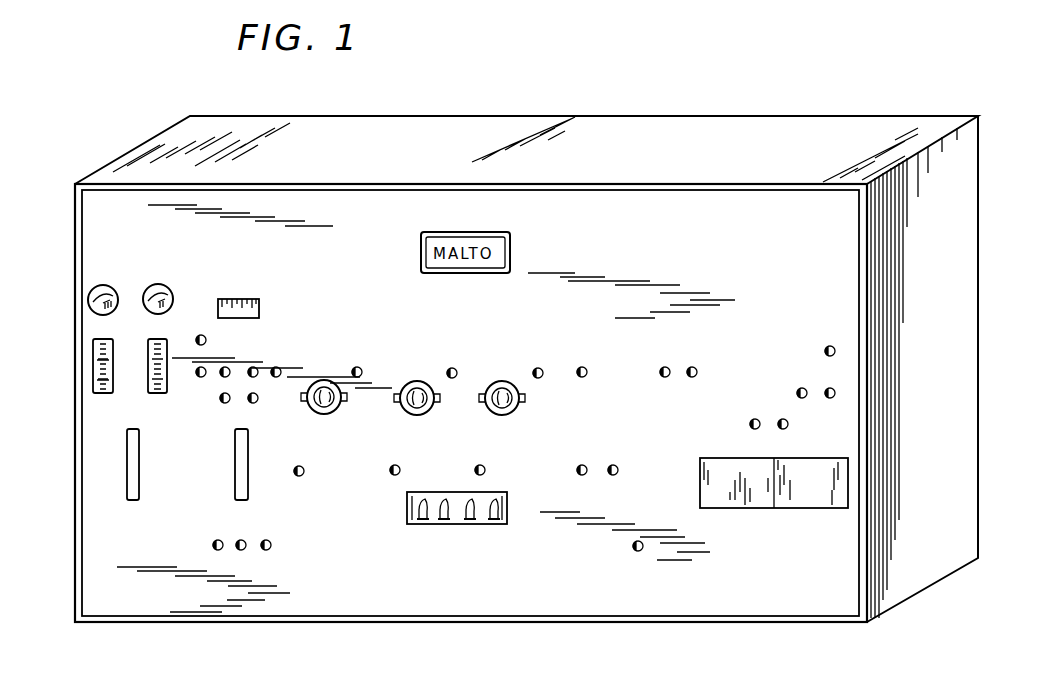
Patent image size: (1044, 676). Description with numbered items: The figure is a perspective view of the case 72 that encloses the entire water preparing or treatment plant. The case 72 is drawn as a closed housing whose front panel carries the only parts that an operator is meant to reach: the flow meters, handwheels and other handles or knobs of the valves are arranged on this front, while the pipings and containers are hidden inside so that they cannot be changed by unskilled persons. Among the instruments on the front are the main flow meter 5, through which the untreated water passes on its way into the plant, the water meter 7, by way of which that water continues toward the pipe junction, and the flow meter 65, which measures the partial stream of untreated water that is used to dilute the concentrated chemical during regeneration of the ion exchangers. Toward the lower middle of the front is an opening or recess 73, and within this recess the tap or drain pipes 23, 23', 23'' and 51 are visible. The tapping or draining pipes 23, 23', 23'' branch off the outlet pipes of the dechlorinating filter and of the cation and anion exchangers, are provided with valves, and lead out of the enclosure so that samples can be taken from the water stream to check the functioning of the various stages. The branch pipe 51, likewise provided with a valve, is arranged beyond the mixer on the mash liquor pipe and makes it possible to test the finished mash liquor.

The main flow meter 5 is at (93, 365).
The flow meter 65 is at (167, 385).
The water meter 7 is at (259, 310).
The case 72 is at (968, 450).
The opening or recess 73 is at (485, 498).
The tapping or draining pipe 23 is at (394, 502).
The tapping or draining pipe 23' is at (422, 530).
The tapping or draining pipe 23'' is at (478, 530).
The branch pipe 51 is at (498, 508).